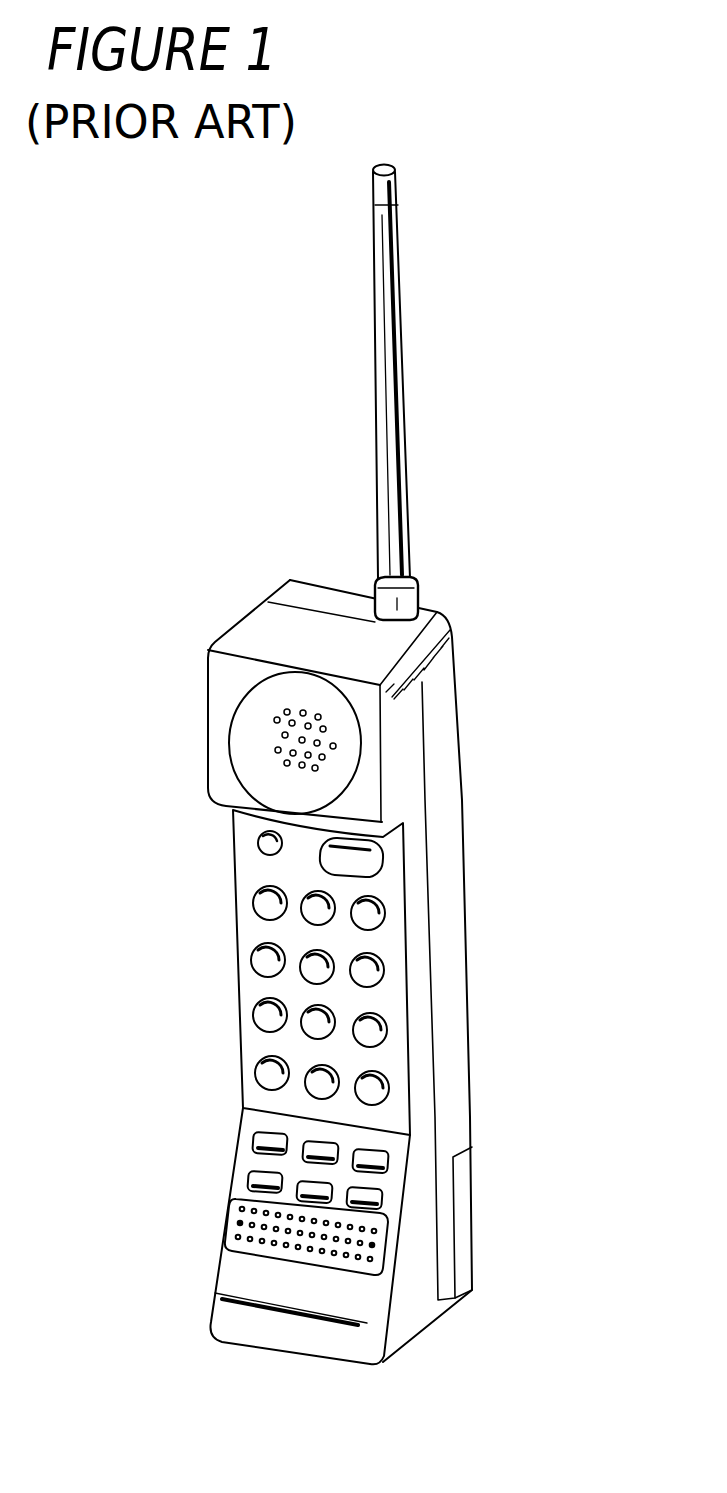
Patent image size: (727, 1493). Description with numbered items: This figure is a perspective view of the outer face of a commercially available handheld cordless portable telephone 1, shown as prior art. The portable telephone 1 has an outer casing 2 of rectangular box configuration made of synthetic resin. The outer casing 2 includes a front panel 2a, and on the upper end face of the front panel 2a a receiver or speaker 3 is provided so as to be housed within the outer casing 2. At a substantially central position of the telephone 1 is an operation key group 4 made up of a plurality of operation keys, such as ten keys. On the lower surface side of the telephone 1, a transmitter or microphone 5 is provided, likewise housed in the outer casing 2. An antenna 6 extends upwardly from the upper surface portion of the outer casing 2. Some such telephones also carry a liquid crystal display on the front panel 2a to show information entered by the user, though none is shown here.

The portable telephone 1 is at (531, 668).
The outer casing 2 is at (415, 1023).
The front panel 2a is at (400, 882).
The speaker 3 is at (268, 733).
The operation key group 4 is at (262, 961).
The microphone 5 is at (235, 1245).
The antenna 6 is at (405, 393).